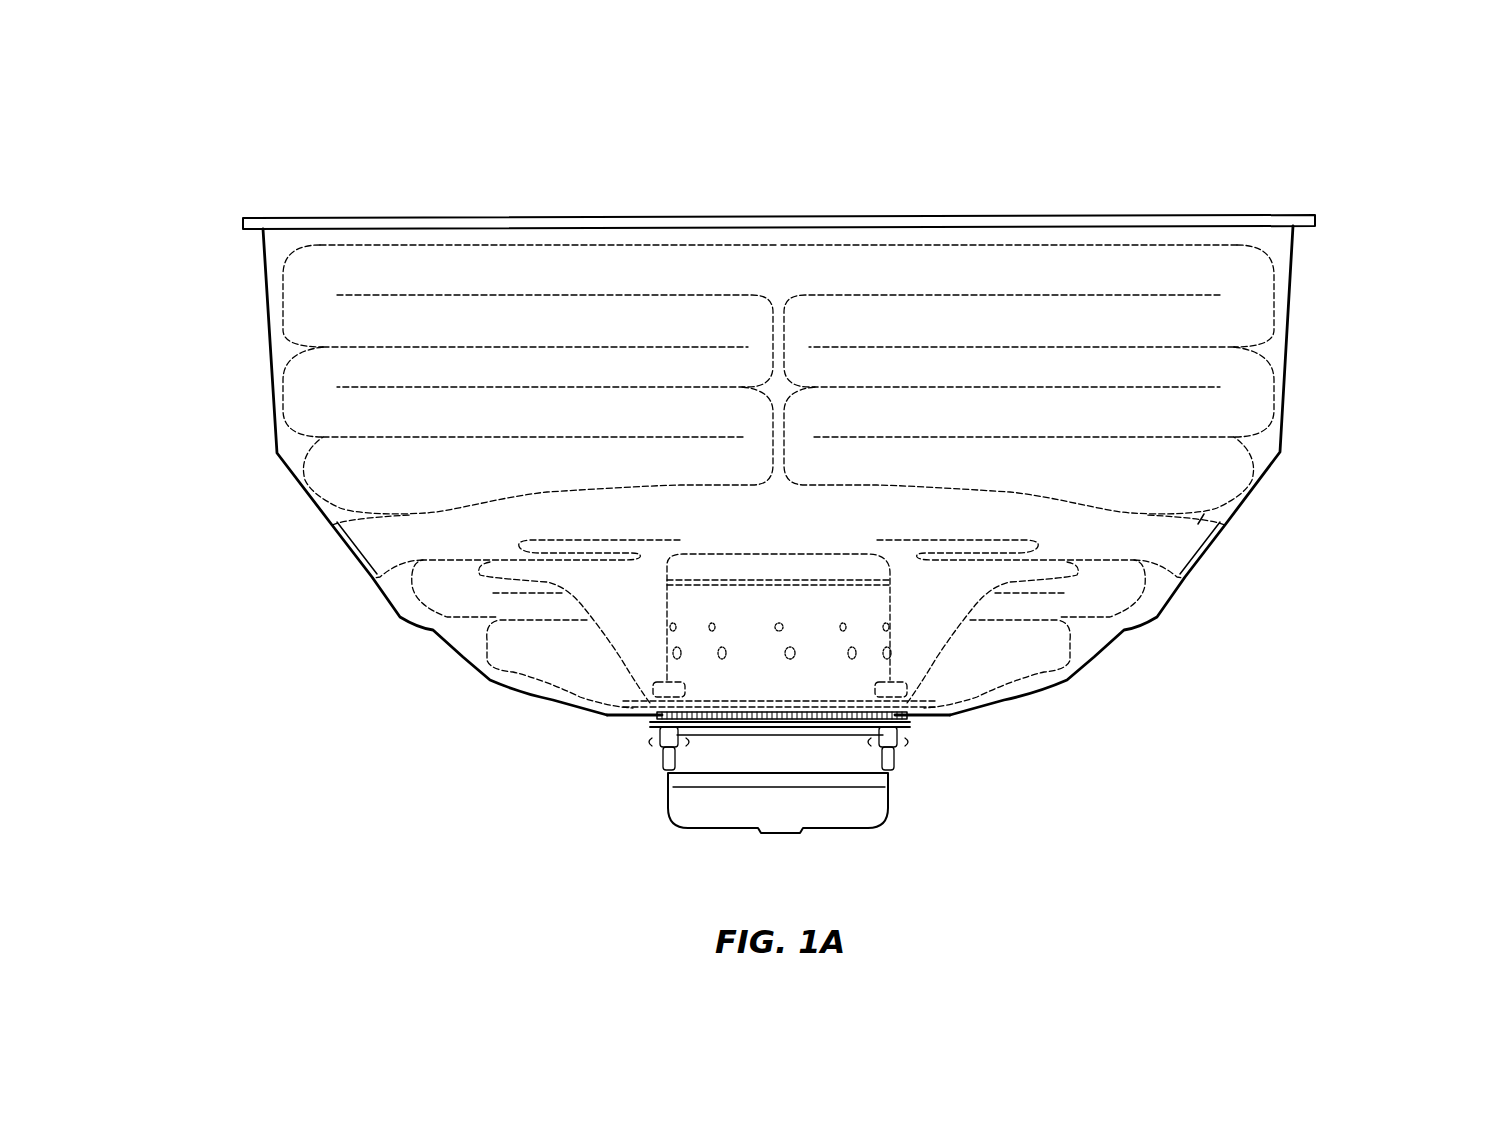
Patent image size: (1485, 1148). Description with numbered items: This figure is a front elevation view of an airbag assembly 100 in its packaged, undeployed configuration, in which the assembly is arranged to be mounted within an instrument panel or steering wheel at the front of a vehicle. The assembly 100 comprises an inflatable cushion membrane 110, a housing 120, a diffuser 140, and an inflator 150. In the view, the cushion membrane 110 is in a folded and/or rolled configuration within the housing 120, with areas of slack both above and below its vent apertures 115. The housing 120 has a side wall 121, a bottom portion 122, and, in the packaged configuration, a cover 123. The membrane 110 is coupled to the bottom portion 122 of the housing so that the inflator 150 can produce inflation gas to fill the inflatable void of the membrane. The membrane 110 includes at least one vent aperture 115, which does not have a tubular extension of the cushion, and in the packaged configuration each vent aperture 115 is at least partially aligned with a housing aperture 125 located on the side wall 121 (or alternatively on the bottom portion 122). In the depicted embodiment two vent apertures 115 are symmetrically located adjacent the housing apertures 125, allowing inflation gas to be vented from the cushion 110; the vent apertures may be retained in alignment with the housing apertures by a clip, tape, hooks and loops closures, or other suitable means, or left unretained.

The airbag assembly 100 is at (1283, 121).
The inflatable cushion membrane 110 is at (1188, 375).
The vent aperture 115 is at (1205, 518).
The housing 120 is at (263, 266).
The side wall 121 is at (267, 338).
The bottom portion 122 is at (638, 725).
The cover 123 is at (1013, 215).
The housing aperture 125 is at (372, 577).
The diffuser 140 is at (952, 632).
The inflator 150 is at (877, 638).